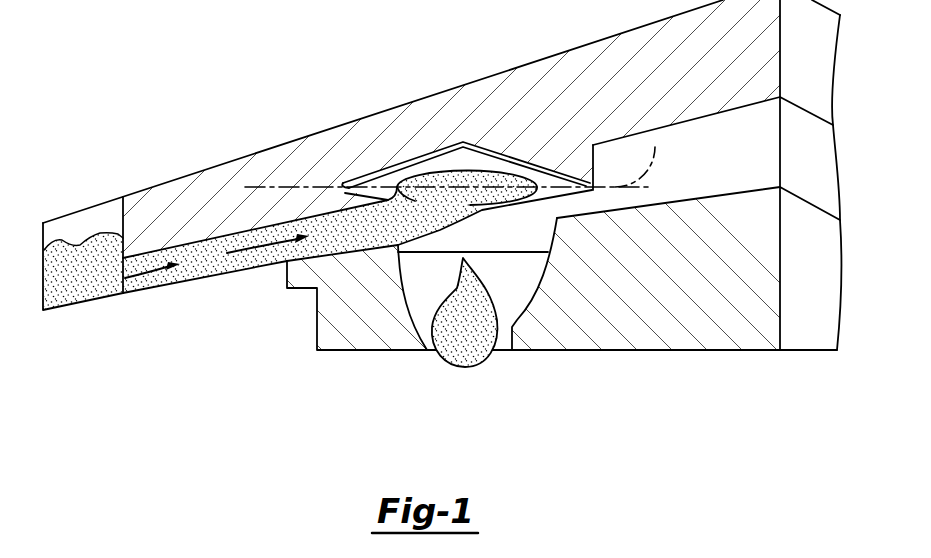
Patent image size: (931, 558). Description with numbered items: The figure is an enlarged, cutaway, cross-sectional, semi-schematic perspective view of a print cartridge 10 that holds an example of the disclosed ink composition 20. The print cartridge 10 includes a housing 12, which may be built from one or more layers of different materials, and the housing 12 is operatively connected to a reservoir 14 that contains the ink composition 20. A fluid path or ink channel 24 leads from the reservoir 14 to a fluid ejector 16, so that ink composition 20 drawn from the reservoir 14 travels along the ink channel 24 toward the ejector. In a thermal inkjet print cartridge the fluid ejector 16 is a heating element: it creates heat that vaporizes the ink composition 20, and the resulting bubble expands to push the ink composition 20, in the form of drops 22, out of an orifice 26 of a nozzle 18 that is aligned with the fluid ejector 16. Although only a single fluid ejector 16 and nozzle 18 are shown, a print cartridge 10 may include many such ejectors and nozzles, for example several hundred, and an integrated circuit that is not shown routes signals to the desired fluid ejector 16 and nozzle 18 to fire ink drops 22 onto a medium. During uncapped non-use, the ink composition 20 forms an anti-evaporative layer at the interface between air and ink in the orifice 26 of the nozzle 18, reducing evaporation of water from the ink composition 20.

The print cartridge 10 is at (146, 128).
The housing 12 is at (347, 320).
The reservoir 14 is at (83, 302).
The fluid ejector 16 is at (462, 152).
The nozzle 18 is at (517, 320).
The ink composition 20 is at (120, 276).
The drops 22 is at (455, 350).
The fluid path/ink channel 24 is at (203, 275).
The orifice 26 is at (492, 180).